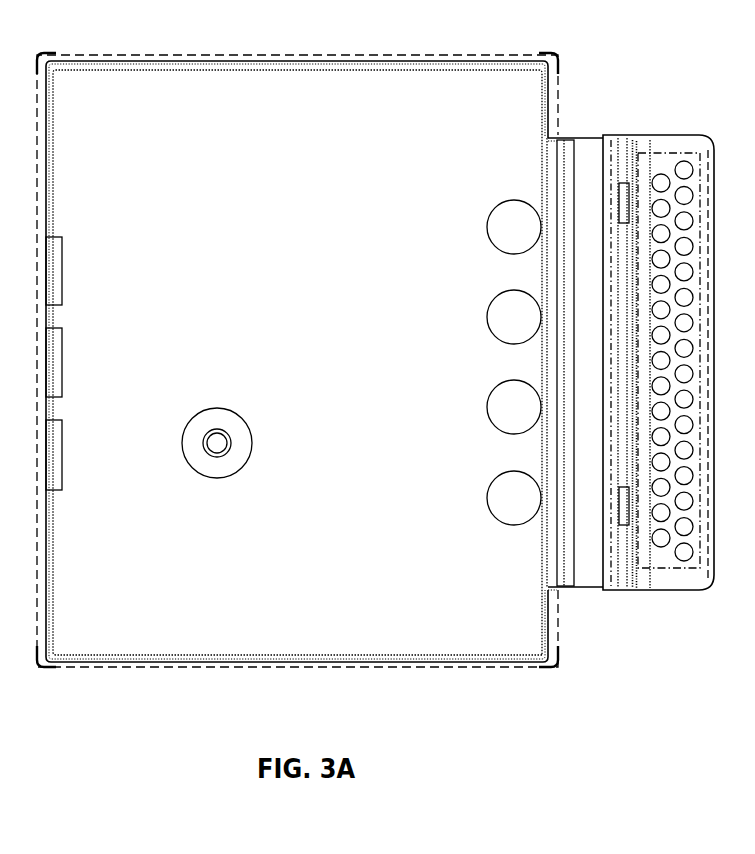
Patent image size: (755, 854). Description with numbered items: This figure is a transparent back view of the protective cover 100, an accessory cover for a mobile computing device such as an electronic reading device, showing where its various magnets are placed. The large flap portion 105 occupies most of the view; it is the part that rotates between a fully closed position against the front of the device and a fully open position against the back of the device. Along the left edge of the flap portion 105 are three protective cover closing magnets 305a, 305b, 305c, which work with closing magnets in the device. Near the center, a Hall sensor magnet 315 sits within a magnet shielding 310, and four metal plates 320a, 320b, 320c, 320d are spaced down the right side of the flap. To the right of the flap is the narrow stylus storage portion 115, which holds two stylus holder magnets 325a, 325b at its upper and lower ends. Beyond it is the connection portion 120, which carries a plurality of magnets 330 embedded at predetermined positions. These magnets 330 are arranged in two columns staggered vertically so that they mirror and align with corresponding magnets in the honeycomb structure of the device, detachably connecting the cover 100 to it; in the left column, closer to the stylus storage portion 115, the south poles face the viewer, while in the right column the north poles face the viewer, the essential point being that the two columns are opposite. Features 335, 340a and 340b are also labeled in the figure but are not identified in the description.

The protective cover 100 is at (118, 39).
The flap portion 105 is at (258, 77).
The stylus storage portion 115 is at (627, 590).
The connection portion 120 is at (695, 577).
The protective cover closing magnet 305a is at (62, 272).
The protective cover closing magnet 305b is at (62, 347).
The protective cover closing magnet 305c is at (62, 462).
The magnet shielding 310 is at (215, 476).
The Hall sensor magnet 315 is at (214, 450).
The metal plate 320a is at (510, 245).
The metal plate 320b is at (510, 336).
The metal plate 320c is at (510, 426).
The metal plate 320d is at (510, 517).
The stylus holder magnet 325a is at (624, 183).
The stylus holder magnet 325b is at (623, 525).
The plurality of magnets 330 is at (676, 153).
The boundary line 335 is at (731, 365).
The magnet array (N) 340a is at (715, 361).
The magnet array (S) 340b is at (703, 385).